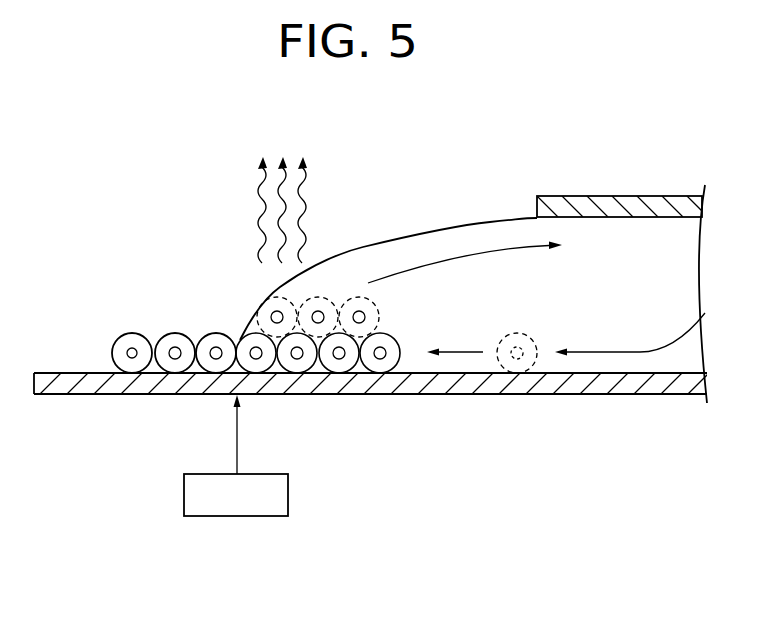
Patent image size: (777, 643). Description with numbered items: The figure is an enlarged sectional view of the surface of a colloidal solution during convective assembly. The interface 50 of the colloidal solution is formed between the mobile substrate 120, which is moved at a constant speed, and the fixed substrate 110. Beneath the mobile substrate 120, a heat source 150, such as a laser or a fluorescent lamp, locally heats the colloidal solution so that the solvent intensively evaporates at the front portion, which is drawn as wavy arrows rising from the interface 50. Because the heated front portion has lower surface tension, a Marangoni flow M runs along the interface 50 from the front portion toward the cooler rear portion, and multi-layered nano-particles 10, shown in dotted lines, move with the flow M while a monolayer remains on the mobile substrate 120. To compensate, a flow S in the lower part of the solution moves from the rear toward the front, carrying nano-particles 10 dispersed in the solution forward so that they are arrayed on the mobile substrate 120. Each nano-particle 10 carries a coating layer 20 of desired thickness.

The nano-particle 10 is at (131, 350).
The coating layer 20 is at (140, 345).
The interface of the colloidal solution 50 is at (422, 232).
The fixed substrate 110 is at (626, 202).
The mobile substrate 120 is at (604, 382).
The heat source 150 is at (235, 518).
The Marangoni flow M is at (487, 250).
The flow S is at (655, 355).